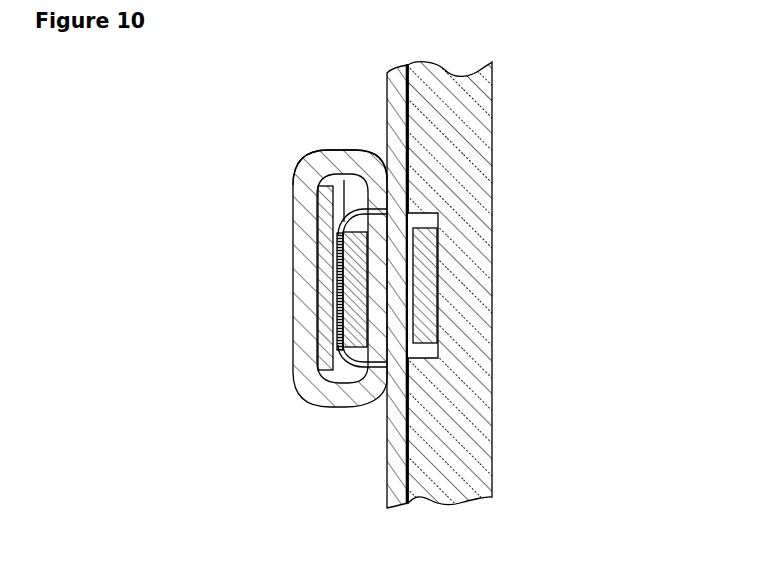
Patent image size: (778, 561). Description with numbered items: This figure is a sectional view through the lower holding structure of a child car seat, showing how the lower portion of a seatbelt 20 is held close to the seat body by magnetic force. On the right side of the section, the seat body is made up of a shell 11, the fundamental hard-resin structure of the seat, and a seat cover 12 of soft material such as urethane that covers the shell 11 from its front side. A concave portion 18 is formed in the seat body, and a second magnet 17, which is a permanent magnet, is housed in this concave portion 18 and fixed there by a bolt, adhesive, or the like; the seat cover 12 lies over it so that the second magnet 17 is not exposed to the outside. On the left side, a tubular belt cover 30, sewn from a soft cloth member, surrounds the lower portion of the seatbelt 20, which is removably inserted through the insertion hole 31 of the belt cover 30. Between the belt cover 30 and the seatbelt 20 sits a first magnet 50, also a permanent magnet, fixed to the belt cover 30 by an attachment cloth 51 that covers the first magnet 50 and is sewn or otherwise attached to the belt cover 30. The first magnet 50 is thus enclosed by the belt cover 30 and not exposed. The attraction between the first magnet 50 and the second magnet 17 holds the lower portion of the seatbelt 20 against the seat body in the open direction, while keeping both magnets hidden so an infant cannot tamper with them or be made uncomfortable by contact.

The shell 11 is at (478, 440).
The seat cover 12 is at (390, 470).
The second magnet 17 is at (438, 277).
The concave portion 18 is at (437, 212).
The seatbelt 20 is at (293, 216).
The belt cover 30 is at (293, 337).
The insertion hole 31 is at (293, 275).
The first magnet 50 is at (341, 150).
The attachment cloth 51 is at (333, 150).